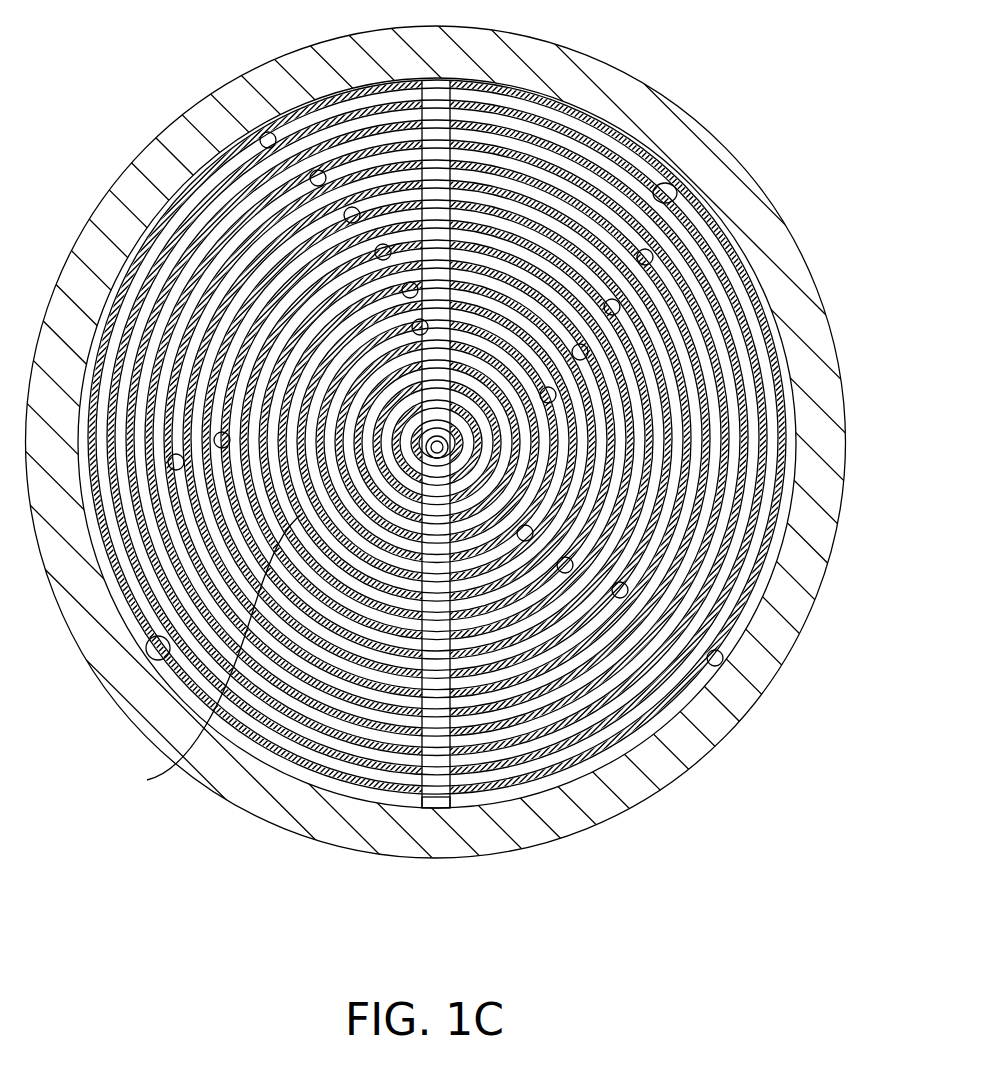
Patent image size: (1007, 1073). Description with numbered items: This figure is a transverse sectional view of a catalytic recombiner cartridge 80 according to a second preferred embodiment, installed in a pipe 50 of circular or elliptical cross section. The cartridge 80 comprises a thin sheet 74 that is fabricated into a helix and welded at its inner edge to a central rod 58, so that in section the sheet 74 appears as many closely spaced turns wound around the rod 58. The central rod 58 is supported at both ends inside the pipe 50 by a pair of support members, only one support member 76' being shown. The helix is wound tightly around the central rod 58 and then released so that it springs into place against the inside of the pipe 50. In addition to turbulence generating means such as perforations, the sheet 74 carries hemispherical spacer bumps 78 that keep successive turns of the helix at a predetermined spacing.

The pipe 50 is at (613, 85).
The thin sheet 74 is at (192, 172).
The hemispherical spacer bumps 78 is at (673, 187).
The catalytic recombiner cartridge 80 is at (670, 717).
The central rod 58 is at (206, 654).
The support member 76' is at (465, 495).